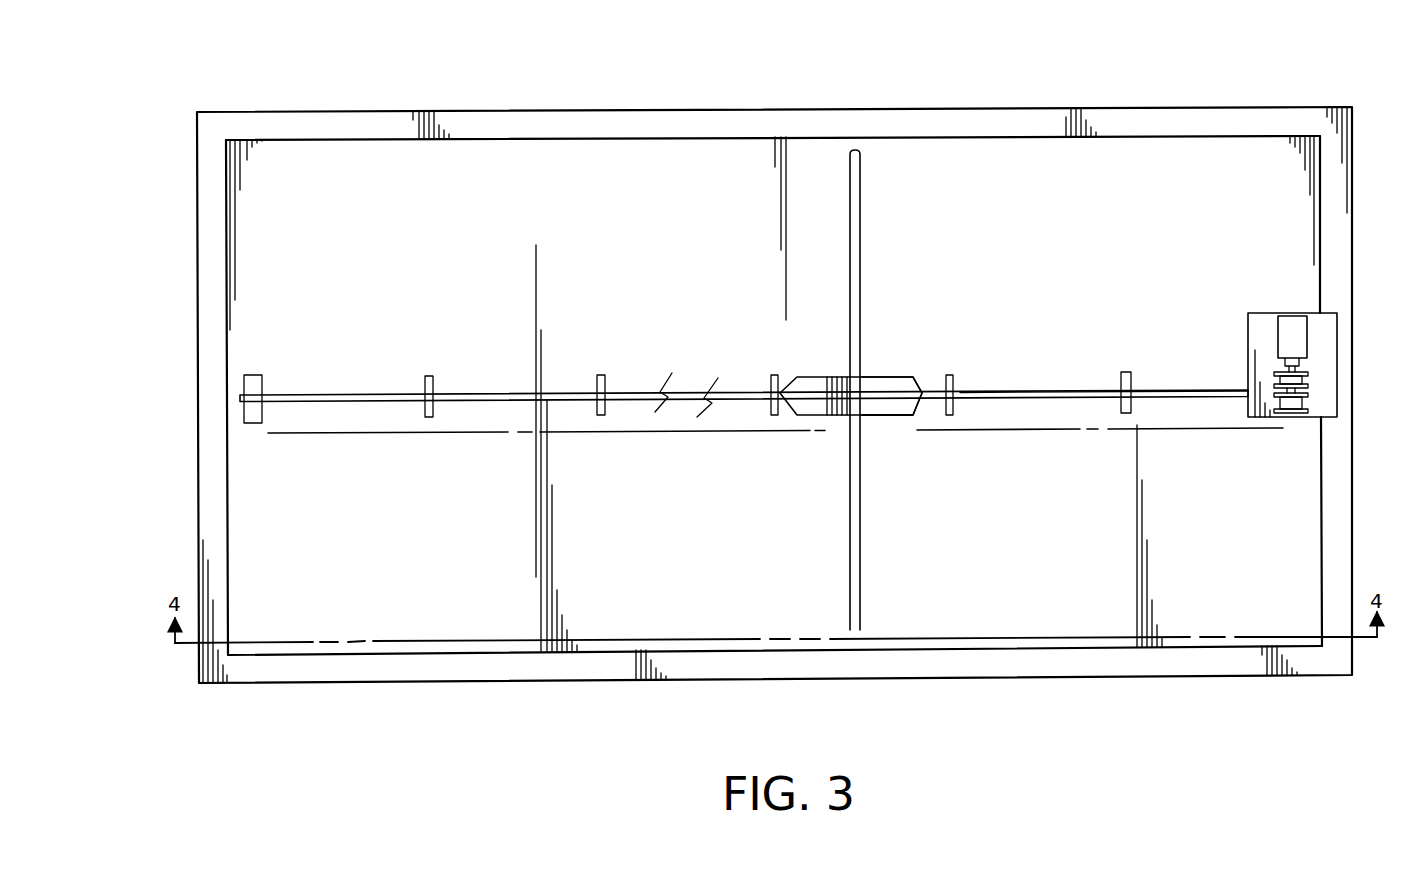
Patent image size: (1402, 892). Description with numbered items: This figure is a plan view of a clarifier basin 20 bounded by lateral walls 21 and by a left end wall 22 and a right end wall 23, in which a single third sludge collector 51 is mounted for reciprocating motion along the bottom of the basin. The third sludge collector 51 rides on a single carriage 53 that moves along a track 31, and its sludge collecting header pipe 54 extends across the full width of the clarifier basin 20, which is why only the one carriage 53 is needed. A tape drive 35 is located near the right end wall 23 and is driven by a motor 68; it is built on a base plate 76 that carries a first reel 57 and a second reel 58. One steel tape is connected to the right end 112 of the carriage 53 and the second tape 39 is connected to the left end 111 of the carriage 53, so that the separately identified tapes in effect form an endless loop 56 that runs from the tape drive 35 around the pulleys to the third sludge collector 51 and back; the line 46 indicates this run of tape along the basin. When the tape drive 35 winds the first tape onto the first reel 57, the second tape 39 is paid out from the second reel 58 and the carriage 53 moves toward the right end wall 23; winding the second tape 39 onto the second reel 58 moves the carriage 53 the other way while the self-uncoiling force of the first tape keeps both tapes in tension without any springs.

The clarifier basin 20 is at (1161, 107).
The lateral walls 21 is at (551, 127).
The left end wall 22 is at (229, 233).
The right end wall 23 is at (1318, 221).
The track 31 is at (679, 393).
The tape drive 35 is at (1268, 347).
The second tape 39 is at (1015, 390).
The endless loop 46 is at (478, 437).
The third sludge collector 51 is at (883, 365).
The carriage 53 is at (897, 407).
The sludge collecting header pipe 54 is at (857, 240).
The endless loop 56 is at (488, 390).
The first reel 57 is at (1308, 373).
The second reel 58 is at (1297, 407).
The motor 68 is at (1300, 328).
The base plate 76 is at (1262, 323).
The left end of the carriage 111 is at (822, 380).
The right end of the carriage 112 is at (913, 380).